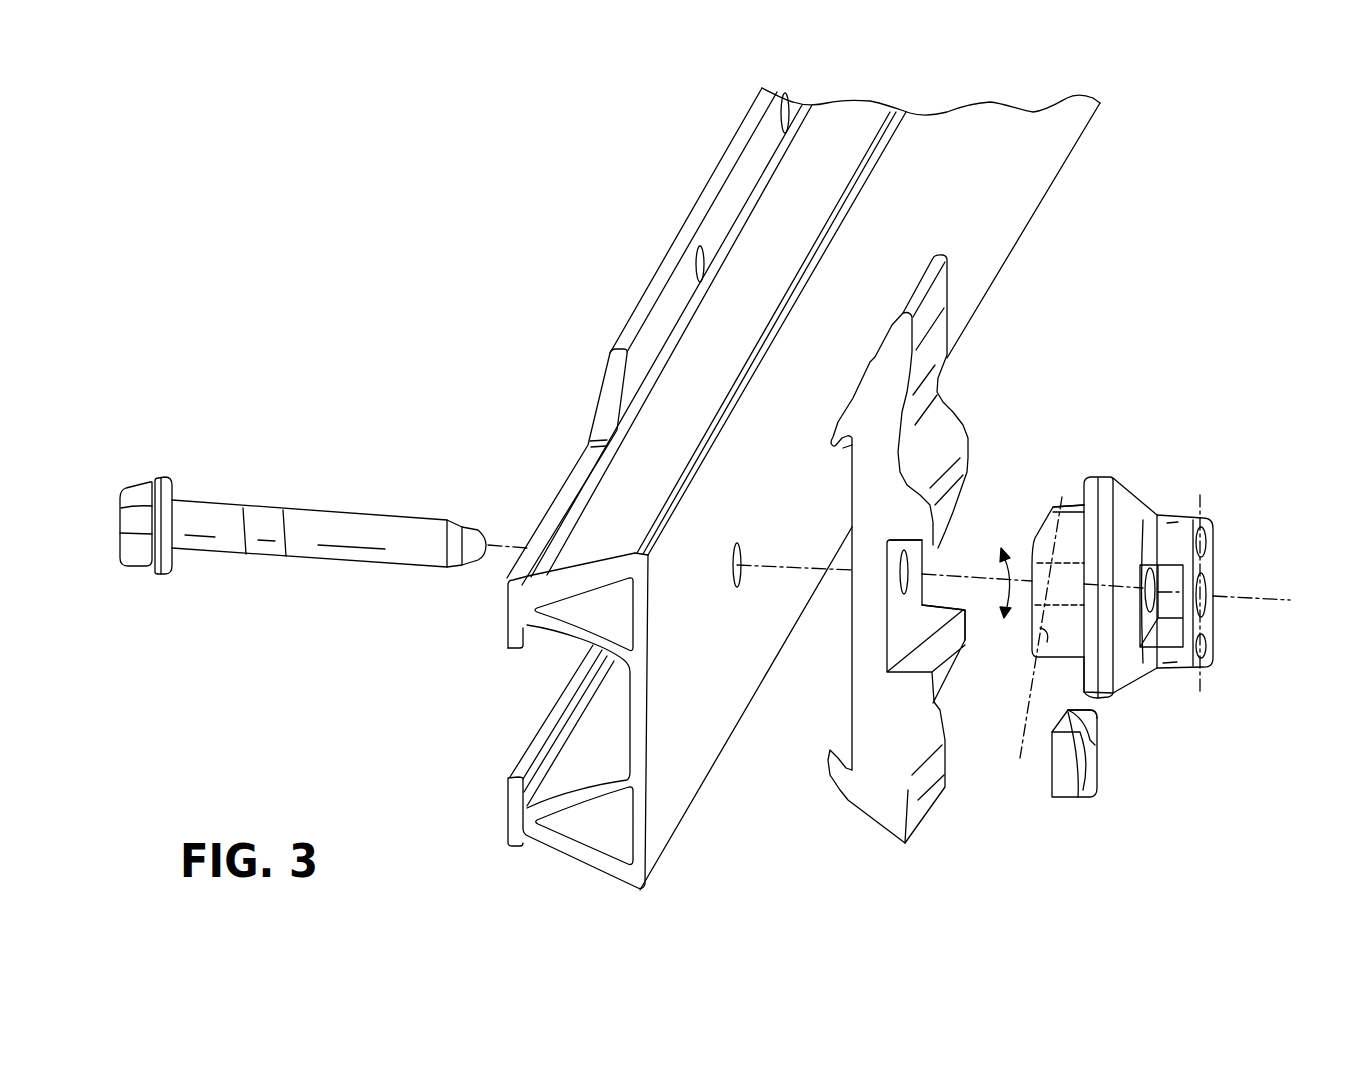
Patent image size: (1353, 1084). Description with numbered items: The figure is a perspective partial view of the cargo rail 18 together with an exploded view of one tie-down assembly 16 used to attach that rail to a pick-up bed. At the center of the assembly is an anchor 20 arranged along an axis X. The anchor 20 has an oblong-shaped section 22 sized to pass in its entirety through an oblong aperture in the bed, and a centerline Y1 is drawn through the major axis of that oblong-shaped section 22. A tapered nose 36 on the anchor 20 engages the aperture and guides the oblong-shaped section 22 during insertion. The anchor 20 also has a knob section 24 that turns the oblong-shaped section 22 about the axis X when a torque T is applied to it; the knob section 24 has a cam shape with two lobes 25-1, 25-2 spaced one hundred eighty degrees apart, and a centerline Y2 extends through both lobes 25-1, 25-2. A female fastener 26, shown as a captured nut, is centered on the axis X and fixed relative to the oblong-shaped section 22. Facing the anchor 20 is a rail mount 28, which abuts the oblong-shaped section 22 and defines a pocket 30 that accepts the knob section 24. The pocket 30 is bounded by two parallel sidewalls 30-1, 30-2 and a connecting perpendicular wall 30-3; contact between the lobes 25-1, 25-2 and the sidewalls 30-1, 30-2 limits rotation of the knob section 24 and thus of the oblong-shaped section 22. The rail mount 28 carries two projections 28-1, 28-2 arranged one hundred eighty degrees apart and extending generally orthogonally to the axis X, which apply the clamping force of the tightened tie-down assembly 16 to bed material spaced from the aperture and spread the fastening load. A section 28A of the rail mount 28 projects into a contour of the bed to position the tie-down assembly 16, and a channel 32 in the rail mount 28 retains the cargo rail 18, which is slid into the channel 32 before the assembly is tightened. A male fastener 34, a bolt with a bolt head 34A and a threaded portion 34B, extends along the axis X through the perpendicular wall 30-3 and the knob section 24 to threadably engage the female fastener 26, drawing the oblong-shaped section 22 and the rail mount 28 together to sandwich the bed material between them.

The tie-down assembly 16 is at (1137, 617).
The cargo rail 18 is at (662, 822).
The anchor 20 is at (1137, 493).
The oblong-shaped section 22 is at (1093, 695).
The knob section 24 is at (1034, 522).
The lobe 25-1 is at (1082, 736).
The lobe 25-2 is at (1065, 510).
The female fastener 26 is at (1066, 786).
The rail mount 28 is at (931, 537).
The projection 28-1 is at (928, 798).
The projection 28-2 is at (921, 296).
The section 28A is at (944, 457).
The pocket 30 is at (945, 605).
The sidewall 30-1 is at (885, 548).
The sidewall 30-2 is at (905, 652).
The perpendicular wall 30-3 is at (918, 568).
The channel 32 is at (843, 448).
The male fastener 34 is at (291, 535).
The bolt head 34A is at (137, 553).
The threaded portion 34B is at (357, 528).
The tapered nose 36 is at (1130, 515).
The axis X is at (1247, 602).
The centerline Y1 is at (1204, 670).
The centerline Y2 is at (1034, 643).
The torque T is at (1006, 625).